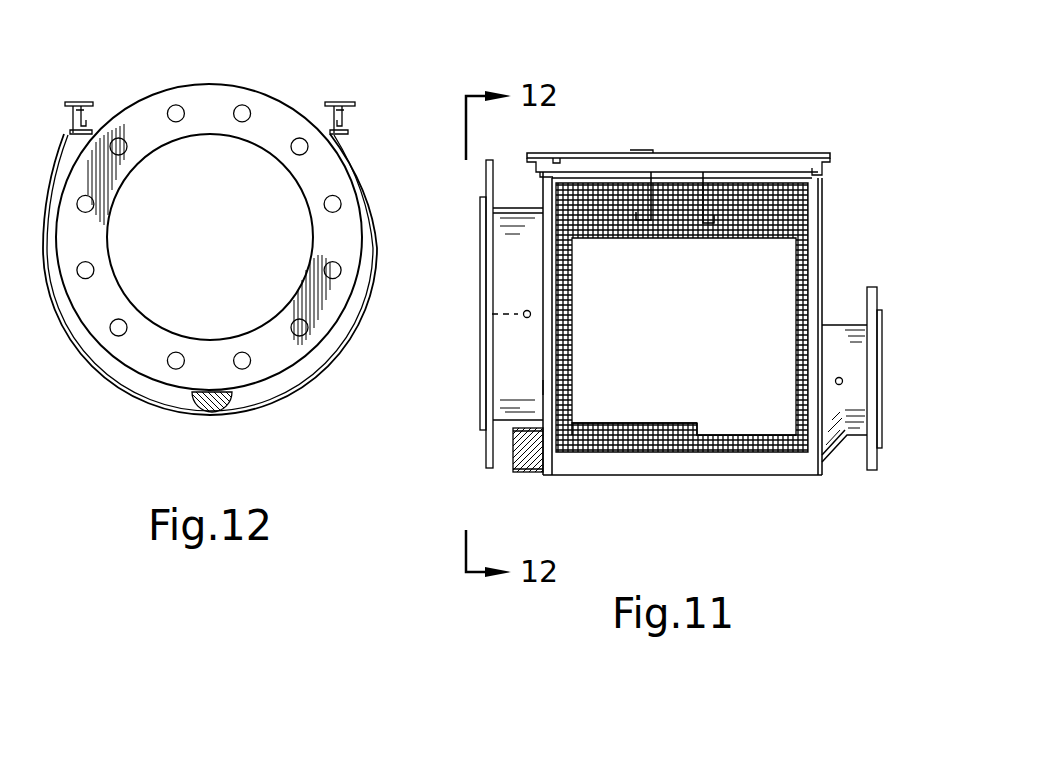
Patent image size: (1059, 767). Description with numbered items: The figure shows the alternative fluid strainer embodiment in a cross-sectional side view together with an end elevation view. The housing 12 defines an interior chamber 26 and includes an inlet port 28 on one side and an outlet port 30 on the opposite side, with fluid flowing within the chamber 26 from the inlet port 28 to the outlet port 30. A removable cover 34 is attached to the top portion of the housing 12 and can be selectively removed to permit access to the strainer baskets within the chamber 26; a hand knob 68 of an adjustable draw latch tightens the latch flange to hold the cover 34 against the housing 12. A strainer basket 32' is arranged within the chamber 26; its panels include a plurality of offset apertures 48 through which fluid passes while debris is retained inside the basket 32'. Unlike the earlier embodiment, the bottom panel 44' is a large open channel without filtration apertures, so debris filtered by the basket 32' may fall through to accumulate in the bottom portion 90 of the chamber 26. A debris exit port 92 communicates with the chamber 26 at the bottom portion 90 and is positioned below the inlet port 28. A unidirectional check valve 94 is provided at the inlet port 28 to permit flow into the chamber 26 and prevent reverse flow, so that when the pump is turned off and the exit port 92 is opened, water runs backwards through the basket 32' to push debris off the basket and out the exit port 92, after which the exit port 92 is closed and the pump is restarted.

In FIG. 12, the housing 12 is at (362, 160).
In FIG. 11, the housing 12 is at (801, 480).
In FIG. 11, the interior chamber 26 is at (542, 387).
In FIG. 12, the fluid inlet port 28 is at (277, 362).
In FIG. 11, the fluid inlet port 28 is at (529, 257).
In FIG. 11, the fluid outlet port 30 is at (838, 338).
In FIG. 11, the strainer basket 32' is at (690, 263).
In FIG. 12, the removable cover element 34 is at (304, 96).
In FIG. 11, the removable cover element 34 is at (578, 152).
In FIG. 11, the bottom panel 44' is at (684, 483).
In FIG. 11, the apertures 48 is at (628, 187).
In FIG. 11, the hand knob 68 is at (812, 155).
In FIG. 11, the bottom portion of the chamber 90 is at (637, 458).
In FIG. 12, the debris exit port 92 is at (207, 412).
In FIG. 11, the debris exit port 92 is at (527, 470).
In FIG. 11, the unidirectional check valve 94 is at (525, 320).